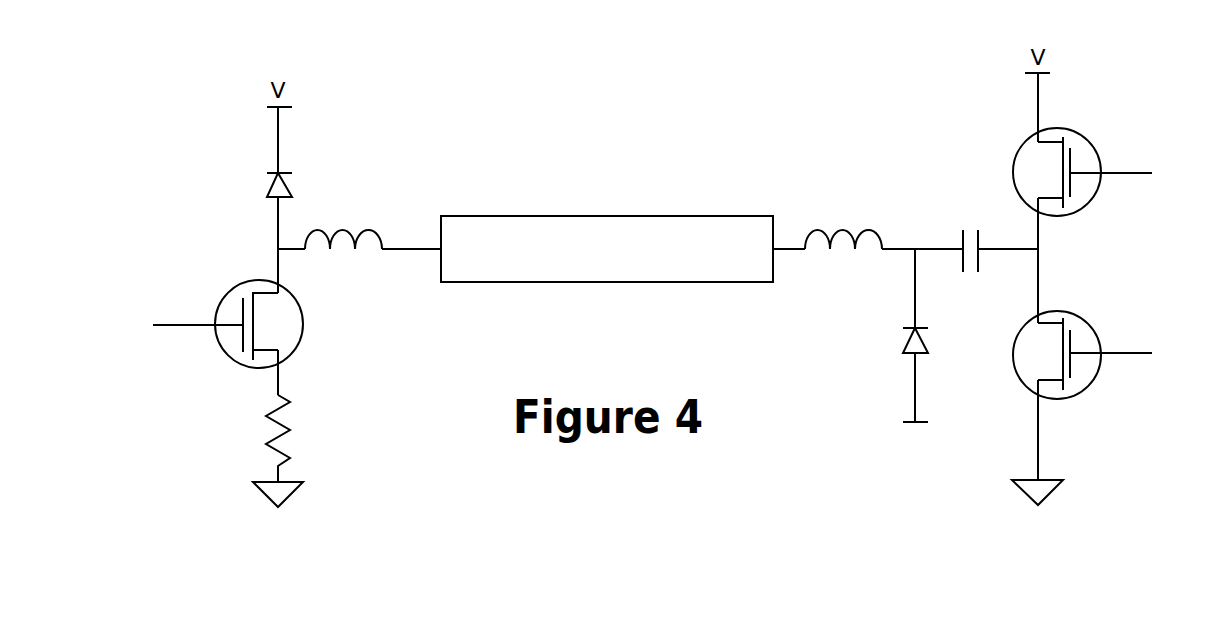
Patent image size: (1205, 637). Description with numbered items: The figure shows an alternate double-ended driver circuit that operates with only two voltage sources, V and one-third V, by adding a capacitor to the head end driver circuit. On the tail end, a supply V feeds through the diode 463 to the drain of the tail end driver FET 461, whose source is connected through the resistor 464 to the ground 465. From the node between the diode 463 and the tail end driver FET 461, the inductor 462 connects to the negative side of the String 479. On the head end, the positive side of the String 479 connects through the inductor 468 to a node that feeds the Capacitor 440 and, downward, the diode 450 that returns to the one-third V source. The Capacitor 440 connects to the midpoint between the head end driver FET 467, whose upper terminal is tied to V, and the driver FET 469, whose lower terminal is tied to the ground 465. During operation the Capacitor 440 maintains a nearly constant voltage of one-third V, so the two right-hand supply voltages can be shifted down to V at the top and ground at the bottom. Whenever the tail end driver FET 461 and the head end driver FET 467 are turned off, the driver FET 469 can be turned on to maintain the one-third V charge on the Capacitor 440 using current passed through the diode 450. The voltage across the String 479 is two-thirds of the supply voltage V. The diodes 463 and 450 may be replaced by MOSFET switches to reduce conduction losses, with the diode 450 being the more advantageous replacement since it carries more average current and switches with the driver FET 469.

The capacitor 440 is at (991, 236).
The diode 450 is at (902, 351).
The tail end driver FET 461 is at (228, 324).
The inductor 462 is at (359, 257).
The diode 463 is at (257, 187).
The resistor 464 is at (304, 438).
The ground 465 is at (653, 501).
The head end driver FET 467 is at (1082, 172).
The inductor 468 is at (868, 254).
The driver FET 469 is at (1082, 355).
The string 479 is at (607, 249).